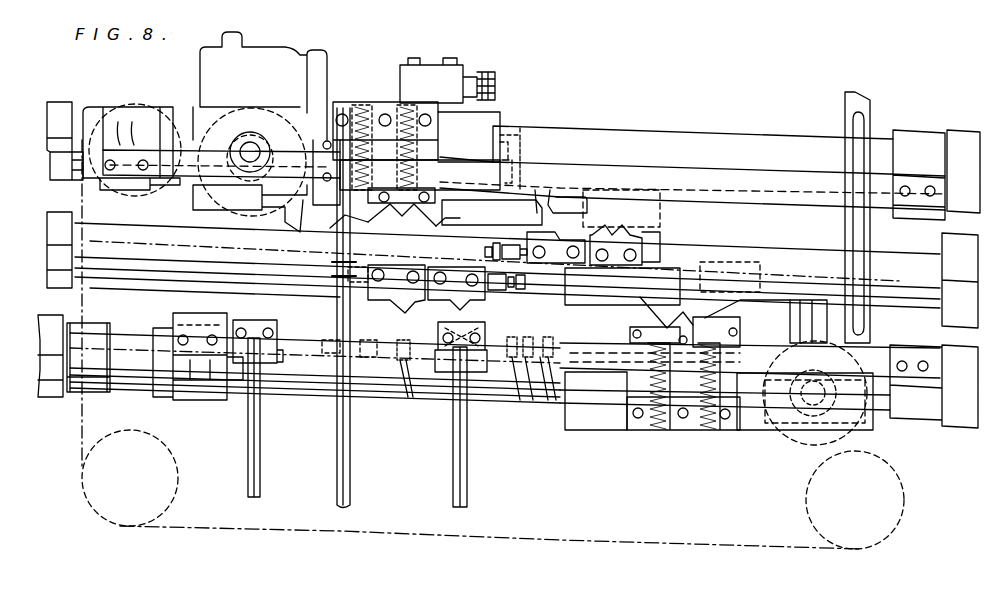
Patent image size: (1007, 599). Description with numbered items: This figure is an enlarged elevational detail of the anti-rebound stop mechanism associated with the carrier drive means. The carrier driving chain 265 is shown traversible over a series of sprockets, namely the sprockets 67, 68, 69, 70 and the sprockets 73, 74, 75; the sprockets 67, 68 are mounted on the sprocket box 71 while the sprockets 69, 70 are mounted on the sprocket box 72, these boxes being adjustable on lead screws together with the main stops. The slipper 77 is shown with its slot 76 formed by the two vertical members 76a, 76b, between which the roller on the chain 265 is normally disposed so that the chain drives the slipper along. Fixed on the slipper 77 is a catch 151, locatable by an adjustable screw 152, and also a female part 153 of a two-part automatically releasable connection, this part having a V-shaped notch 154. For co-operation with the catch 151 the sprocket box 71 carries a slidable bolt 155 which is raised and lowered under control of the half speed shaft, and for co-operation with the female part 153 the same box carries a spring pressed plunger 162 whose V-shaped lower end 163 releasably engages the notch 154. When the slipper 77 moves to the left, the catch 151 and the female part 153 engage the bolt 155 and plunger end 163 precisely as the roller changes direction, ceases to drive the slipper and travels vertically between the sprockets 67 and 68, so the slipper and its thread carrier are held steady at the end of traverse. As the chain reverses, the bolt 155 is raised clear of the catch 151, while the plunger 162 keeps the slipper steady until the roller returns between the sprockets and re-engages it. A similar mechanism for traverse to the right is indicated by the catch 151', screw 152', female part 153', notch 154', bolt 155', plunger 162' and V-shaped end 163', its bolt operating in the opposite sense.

The sprocket 73 is at (137, 106).
The carrier driving chain 265 is at (178, 104).
The sprocket 67 is at (262, 107).
The sprocket box 71 is at (352, 102).
The slot 76 is at (511, 194).
The slipper 77 is at (538, 205).
The vertical member 76a is at (478, 212).
The vertical member 76b is at (580, 190).
The catch 151 is at (592, 200).
The V-shaped notch 154 is at (641, 201).
The female part 153 is at (682, 236).
The adjustable screw 152 is at (489, 244).
The adjustable screw 152' is at (528, 284).
The slidable bolt 155 is at (357, 233).
The slidable bolt 155' is at (755, 286).
The spring pressed plunger 162 is at (420, 181).
The spring pressed plunger 162' is at (652, 373).
The V-shaped lower end 163 is at (440, 230).
The V-shaped lower end 163' is at (629, 298).
The sprocket 68 is at (388, 228).
The sprocket 69 is at (720, 277).
The female part 153' is at (387, 293).
The catch 151' is at (480, 333).
The V-shaped notch 154' is at (409, 406).
The sprocket box 72 is at (750, 423).
The sprocket 70 is at (823, 450).
The sprocket 74 is at (173, 460).
The sprocket 75 is at (903, 510).